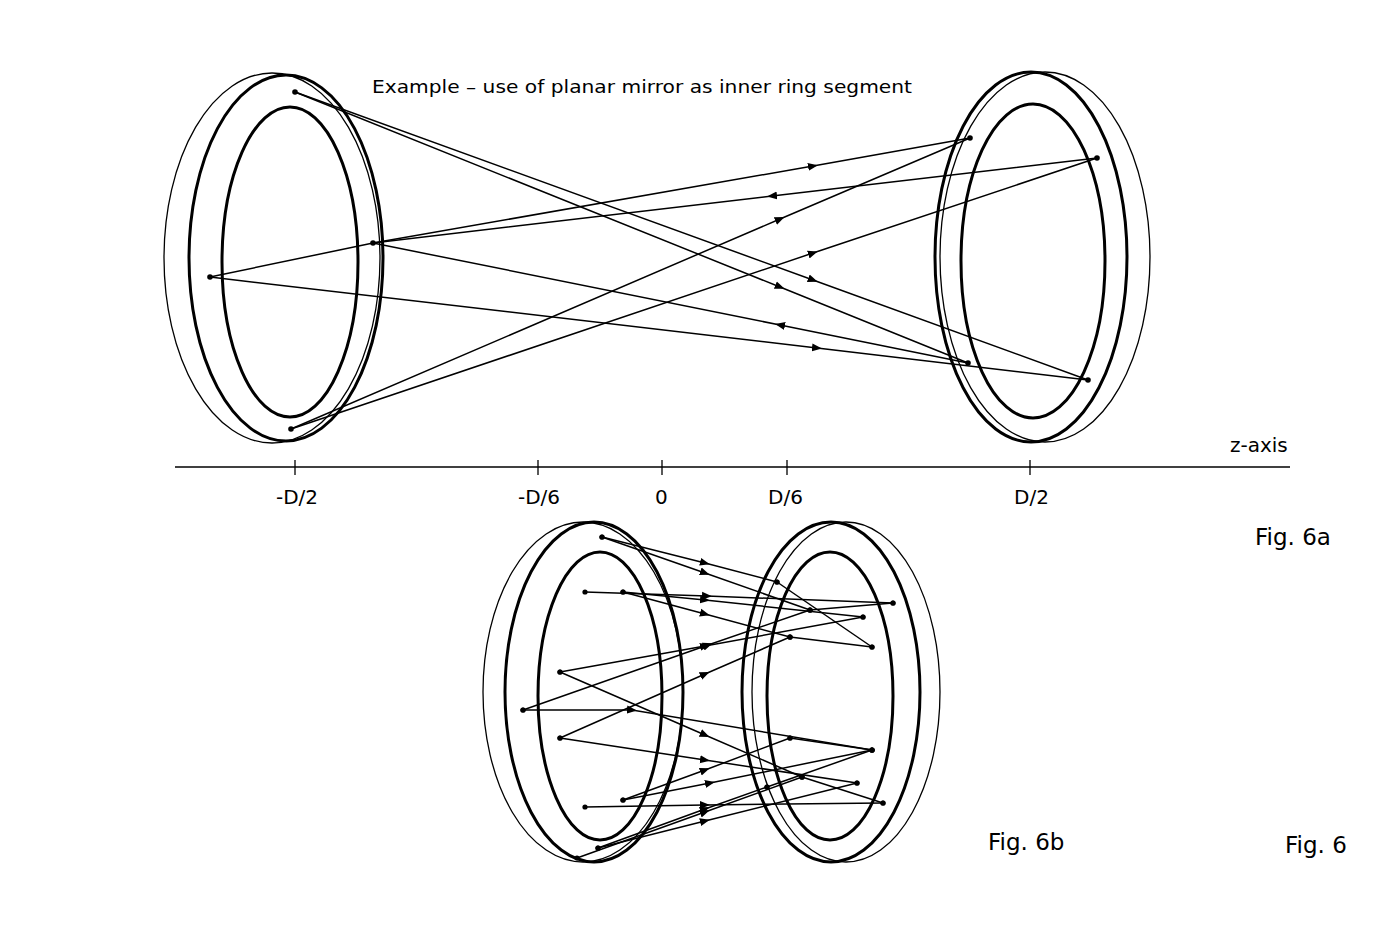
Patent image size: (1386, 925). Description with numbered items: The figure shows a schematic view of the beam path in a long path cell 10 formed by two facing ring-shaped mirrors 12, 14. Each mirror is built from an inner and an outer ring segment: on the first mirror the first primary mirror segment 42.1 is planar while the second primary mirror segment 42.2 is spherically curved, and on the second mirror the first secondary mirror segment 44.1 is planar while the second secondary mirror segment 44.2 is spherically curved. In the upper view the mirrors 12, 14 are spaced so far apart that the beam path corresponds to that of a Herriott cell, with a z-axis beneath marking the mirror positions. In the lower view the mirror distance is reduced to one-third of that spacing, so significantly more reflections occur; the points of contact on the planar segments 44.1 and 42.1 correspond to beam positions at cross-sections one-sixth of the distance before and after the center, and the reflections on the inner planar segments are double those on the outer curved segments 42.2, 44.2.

The long path cell 10 is at (772, 244).
The mirror 12 is at (241, 258).
The mirror 14 is at (1109, 257).
The first primary mirror segment 42.1 is at (268, 222).
The second primary mirror segment 42.2 is at (222, 352).
The first secondary mirror segment 44.1 is at (1062, 260).
The second secondary mirror segment 44.2 is at (1105, 323).